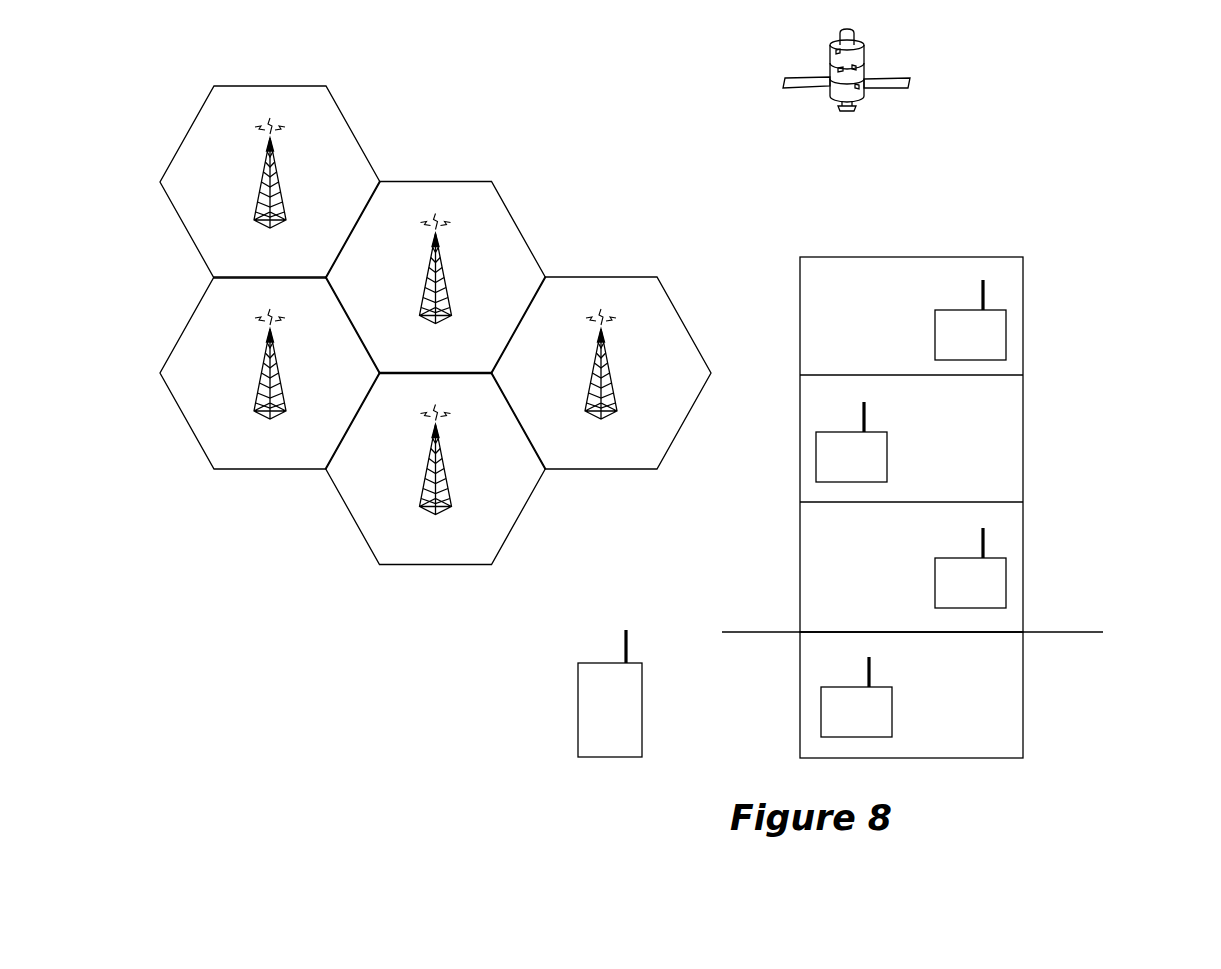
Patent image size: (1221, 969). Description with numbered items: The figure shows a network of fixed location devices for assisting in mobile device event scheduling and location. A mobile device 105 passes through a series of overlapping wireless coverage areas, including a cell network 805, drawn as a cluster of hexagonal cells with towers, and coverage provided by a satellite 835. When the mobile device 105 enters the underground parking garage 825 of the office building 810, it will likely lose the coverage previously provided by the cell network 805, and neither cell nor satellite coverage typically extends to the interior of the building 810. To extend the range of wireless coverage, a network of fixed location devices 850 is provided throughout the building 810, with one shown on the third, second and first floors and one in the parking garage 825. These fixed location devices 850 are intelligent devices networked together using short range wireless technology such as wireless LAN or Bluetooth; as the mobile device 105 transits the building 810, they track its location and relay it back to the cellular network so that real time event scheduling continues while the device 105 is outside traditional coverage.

The cell network 805 is at (412, 141).
The office building 810 is at (961, 250).
The underground parking garage 825 is at (1023, 710).
The satellite 835 is at (883, 90).
The fixed location devices 850 is at (1006, 335).
The mobile device 105 is at (578, 702).